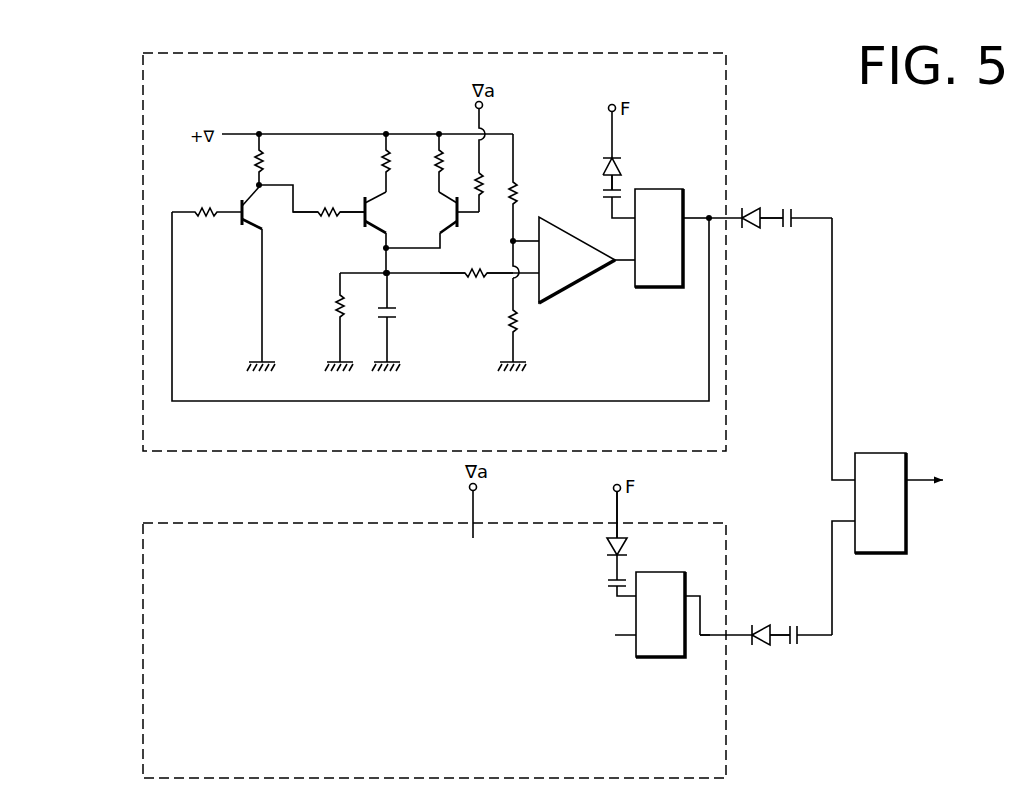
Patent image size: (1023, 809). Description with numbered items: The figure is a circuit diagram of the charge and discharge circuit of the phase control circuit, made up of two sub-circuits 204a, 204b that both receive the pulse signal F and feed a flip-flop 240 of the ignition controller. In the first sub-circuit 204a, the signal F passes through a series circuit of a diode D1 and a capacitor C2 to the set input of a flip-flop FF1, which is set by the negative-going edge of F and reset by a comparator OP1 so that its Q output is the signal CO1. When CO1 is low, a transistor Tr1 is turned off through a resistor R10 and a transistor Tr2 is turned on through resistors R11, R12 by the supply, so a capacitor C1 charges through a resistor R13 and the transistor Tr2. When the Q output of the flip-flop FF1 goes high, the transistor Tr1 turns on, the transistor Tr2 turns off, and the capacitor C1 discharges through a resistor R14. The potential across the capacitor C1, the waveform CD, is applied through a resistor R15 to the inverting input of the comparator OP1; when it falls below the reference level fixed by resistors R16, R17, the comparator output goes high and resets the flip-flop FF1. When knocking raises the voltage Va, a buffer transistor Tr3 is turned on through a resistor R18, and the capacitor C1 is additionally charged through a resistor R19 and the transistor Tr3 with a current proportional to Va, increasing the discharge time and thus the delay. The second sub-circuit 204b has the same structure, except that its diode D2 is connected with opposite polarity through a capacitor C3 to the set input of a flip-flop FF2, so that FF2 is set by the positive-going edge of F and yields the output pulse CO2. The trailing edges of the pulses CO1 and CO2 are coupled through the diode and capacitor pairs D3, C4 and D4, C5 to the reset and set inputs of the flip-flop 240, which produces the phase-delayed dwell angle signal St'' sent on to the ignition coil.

The sub-circuit 204a is at (727, 92).
The sub-circuit 204b is at (727, 548).
The flip-flop 240 is at (882, 453).
The resistor R10 is at (207, 200).
The resistor R11 is at (276, 159).
The resistor R12 is at (329, 201).
The resistor R13 is at (404, 163).
The resistor R14 is at (323, 317).
The resistor R15 is at (476, 262).
The resistor R16 is at (531, 206).
The resistor R17 is at (498, 320).
The resistor R18 is at (462, 192).
The resistor R19 is at (456, 163).
The transistor Tr1 is at (231, 215).
The transistor Tr2 is at (372, 190).
The transistor Tr3 is at (453, 210).
The capacitor C1 is at (399, 317).
The capacitor C2 is at (604, 196).
The capacitor C3 is at (607, 575).
The capacitor C4 is at (796, 207).
The capacitor C5 is at (801, 622).
The diode D1 is at (625, 174).
The diode D2 is at (630, 523).
The diode D3 is at (746, 206).
The diode D4 is at (745, 623).
The comparator OP1 is at (592, 291).
The flip-flop FF1 is at (664, 288).
The flip-flop FF2 is at (667, 659).
The capacitor potential waveform CD is at (389, 275).
The output signal CO1 is at (708, 206).
The output pulse CO2 is at (708, 630).